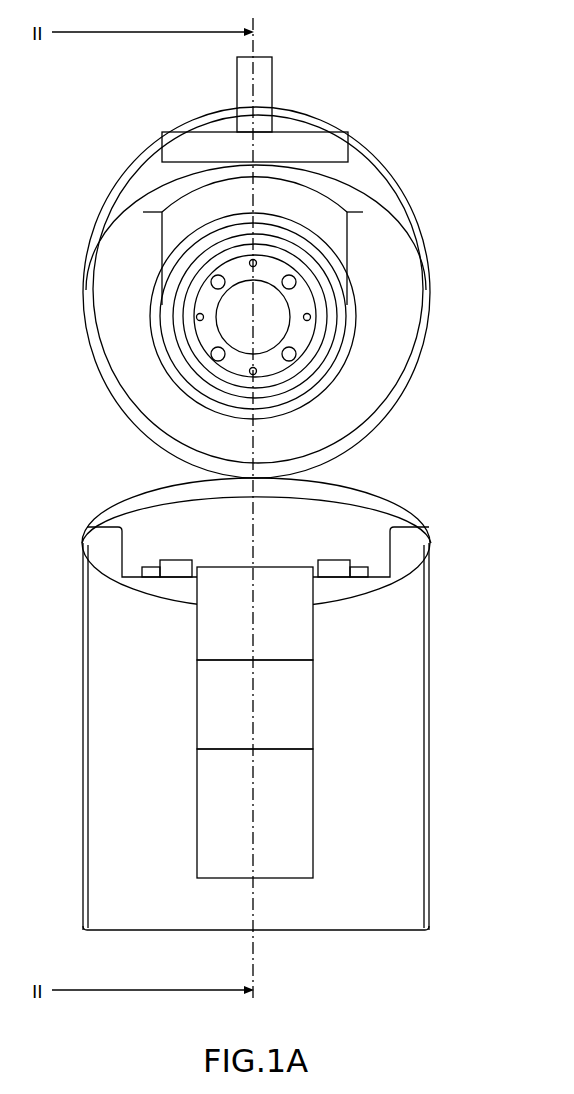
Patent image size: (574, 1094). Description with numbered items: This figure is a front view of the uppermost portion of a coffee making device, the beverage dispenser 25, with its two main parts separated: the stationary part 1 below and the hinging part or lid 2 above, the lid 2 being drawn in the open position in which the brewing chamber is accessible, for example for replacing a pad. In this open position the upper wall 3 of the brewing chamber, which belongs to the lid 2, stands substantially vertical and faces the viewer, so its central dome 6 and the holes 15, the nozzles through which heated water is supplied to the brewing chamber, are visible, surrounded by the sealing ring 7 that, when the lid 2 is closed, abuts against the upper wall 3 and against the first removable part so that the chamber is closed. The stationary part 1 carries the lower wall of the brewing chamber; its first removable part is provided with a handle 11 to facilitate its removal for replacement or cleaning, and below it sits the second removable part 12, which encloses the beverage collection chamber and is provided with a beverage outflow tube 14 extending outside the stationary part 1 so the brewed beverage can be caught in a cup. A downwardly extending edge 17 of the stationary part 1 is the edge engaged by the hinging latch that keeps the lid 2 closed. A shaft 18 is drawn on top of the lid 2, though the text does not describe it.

The stationary part 1 is at (101, 833).
The hinging part 2 is at (112, 321).
The upper wall 3 is at (303, 300).
The dome 6 is at (265, 340).
The sealing ring 7 is at (207, 392).
The handle 11 is at (297, 628).
The second removable part 12 is at (213, 706).
The beverage outflow tube 14 is at (295, 834).
The holes 15 is at (213, 285).
The downwardly extending edge 17 is at (176, 560).
The shaft 18 is at (262, 69).
The beverage dispenser 25 is at (450, 88).